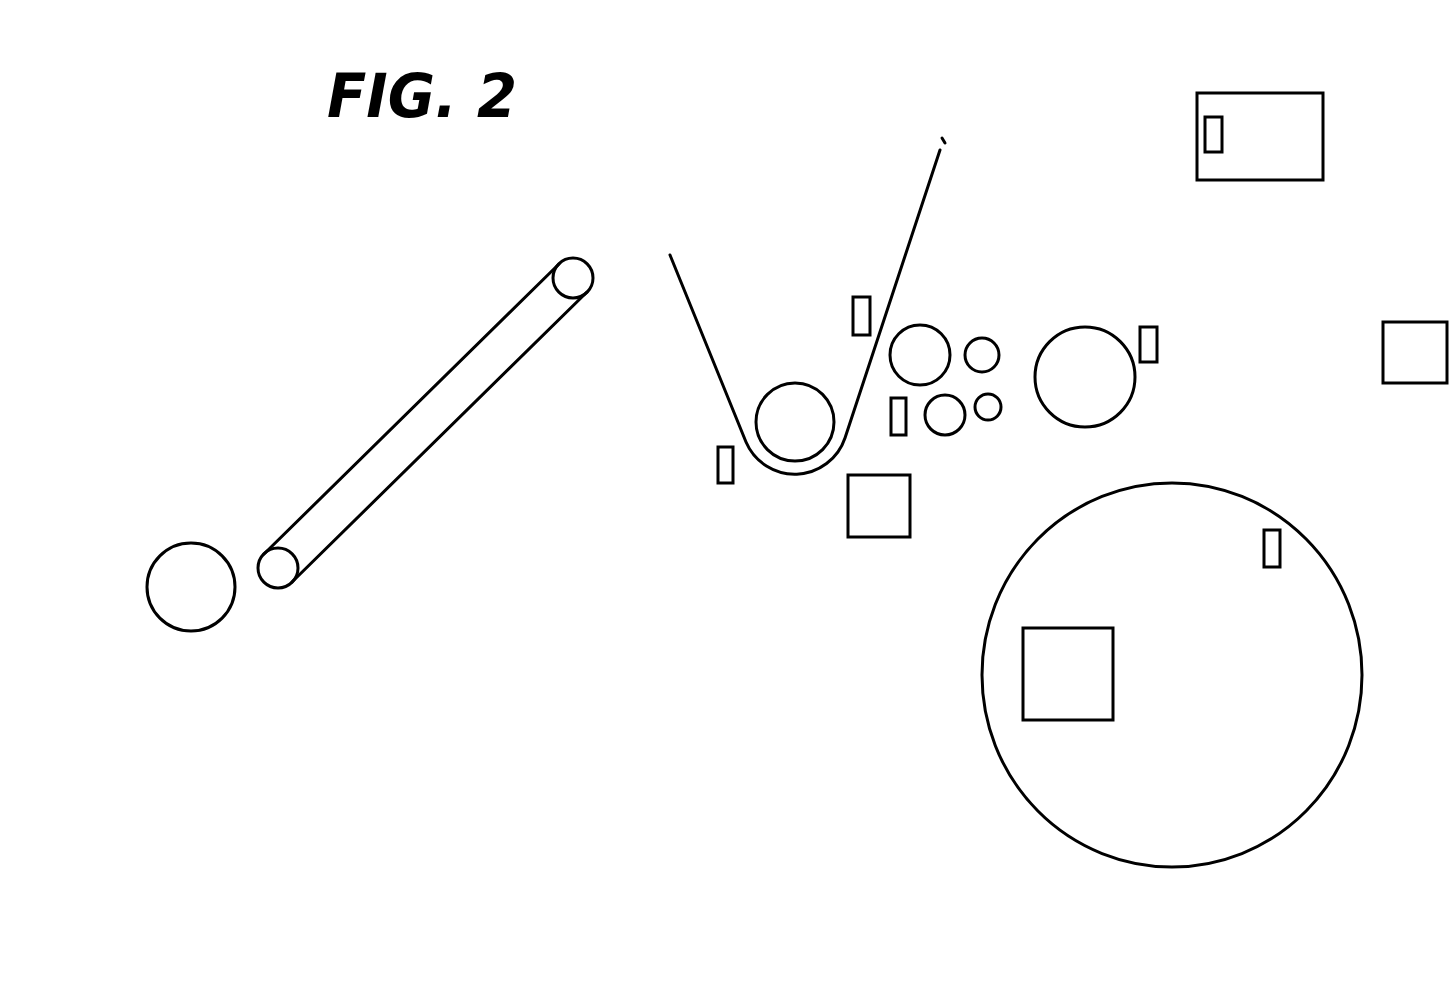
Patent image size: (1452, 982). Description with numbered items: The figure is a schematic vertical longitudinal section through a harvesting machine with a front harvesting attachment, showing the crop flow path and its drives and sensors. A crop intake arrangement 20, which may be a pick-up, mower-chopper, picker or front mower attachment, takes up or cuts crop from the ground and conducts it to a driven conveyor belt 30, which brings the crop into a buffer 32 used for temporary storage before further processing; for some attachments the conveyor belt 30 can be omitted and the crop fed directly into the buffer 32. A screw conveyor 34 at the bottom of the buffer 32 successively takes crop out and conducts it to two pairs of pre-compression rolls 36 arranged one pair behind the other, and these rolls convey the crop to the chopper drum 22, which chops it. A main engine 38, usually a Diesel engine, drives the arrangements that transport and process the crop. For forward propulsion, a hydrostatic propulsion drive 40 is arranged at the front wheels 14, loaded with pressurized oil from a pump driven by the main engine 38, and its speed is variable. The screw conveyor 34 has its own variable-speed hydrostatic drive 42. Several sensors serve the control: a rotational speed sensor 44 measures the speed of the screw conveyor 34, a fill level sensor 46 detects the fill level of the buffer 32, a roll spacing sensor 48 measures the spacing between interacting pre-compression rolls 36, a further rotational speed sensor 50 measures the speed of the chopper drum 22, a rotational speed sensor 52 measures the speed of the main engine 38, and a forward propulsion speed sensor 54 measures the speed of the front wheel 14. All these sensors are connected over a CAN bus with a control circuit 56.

The front wheels 14 is at (1353, 747).
The crop intake arrangement 20 is at (210, 597).
The chopper drum 22 is at (1063, 389).
The conveyor belt 30 is at (388, 473).
The buffer 32 is at (757, 332).
The screw conveyor 34 is at (817, 437).
The pre-compression rolls 36 is at (980, 350).
The main engine 38 is at (1250, 153).
The hydrostatic propulsion drive 40 is at (1048, 684).
The hydrostatic drive 42 is at (861, 520).
The rotational speed sensor 44 is at (718, 467).
The fill level sensor 46 is at (858, 303).
The roll spacing sensor 48 is at (900, 437).
The rotational speed sensor 50 is at (1153, 327).
The rotational speed sensor 52 is at (1212, 130).
The forward propulsion speed sensor 54 is at (1273, 540).
The control circuit 56 is at (1395, 366).